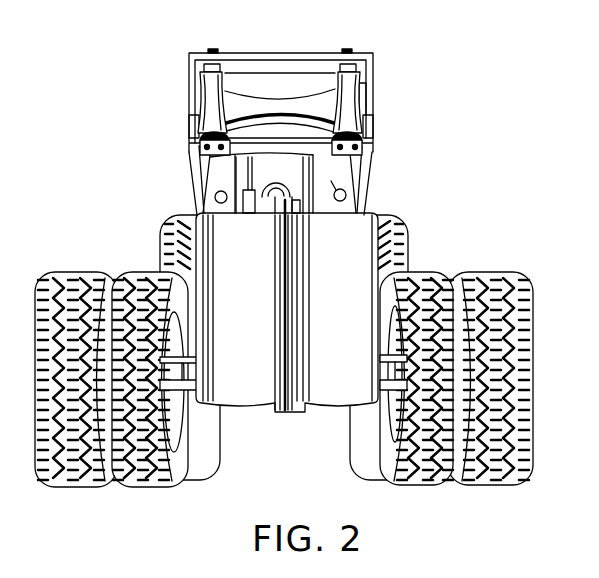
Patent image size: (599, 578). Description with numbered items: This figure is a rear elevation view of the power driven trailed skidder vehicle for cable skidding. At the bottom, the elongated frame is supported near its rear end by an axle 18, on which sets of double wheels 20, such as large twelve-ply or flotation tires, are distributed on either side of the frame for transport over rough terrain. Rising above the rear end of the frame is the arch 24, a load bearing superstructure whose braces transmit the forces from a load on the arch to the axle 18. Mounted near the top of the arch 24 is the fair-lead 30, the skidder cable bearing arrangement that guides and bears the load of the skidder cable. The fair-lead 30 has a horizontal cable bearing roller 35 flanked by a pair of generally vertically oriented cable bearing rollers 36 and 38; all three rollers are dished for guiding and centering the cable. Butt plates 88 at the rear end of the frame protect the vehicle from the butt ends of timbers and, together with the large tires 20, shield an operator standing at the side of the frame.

The axle 18 is at (185, 397).
The sets of double wheels 20 is at (97, 272).
The arch 24 is at (189, 160).
The fair-lead 30 is at (258, 45).
The horizontal cable bearing roller 35 is at (293, 103).
The vertically oriented cable bearing roller 36 is at (362, 92).
The vertically oriented cable bearing roller 38 is at (207, 95).
The butt plates 88 is at (250, 291).